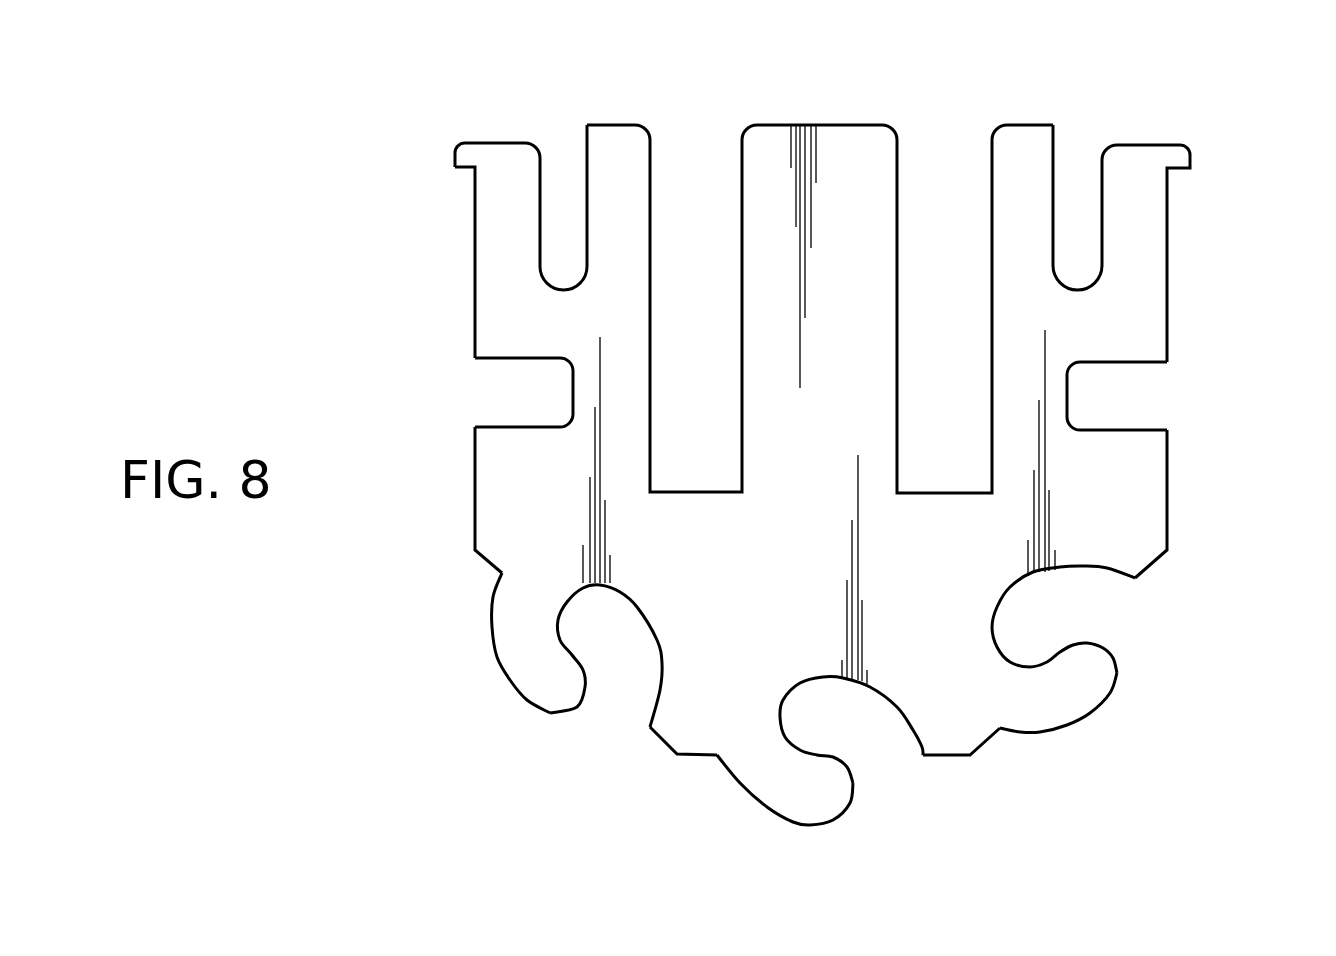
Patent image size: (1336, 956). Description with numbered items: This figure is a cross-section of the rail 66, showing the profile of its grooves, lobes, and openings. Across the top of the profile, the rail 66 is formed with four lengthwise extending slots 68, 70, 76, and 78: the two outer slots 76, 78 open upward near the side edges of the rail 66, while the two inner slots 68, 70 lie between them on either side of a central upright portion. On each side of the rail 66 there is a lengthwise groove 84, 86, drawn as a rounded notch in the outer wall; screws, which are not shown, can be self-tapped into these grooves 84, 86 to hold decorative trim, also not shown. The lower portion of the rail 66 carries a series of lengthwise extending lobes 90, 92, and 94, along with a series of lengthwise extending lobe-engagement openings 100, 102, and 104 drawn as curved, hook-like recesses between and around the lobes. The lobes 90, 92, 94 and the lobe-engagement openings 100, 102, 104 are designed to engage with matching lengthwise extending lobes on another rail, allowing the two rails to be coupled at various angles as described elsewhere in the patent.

The rail 66 is at (831, 486).
The lengthwise extending slot 68 is at (700, 135).
The lengthwise extending slot 70 is at (947, 143).
The lengthwise extending slot 76 is at (560, 135).
The lengthwise extending slot 78 is at (1082, 143).
The lengthwise groove 84 is at (515, 393).
The lengthwise groove 86 is at (1145, 398).
The lengthwise extending lobe 90 is at (505, 698).
The lengthwise extending lobe 92 is at (783, 828).
The lengthwise extending lobe 94 is at (1092, 728).
The lengthwise extending lobe-engagement opening 100 is at (617, 668).
The lengthwise extending lobe-engagement opening 102 is at (855, 735).
The lengthwise extending lobe-engagement opening 104 is at (1053, 618).